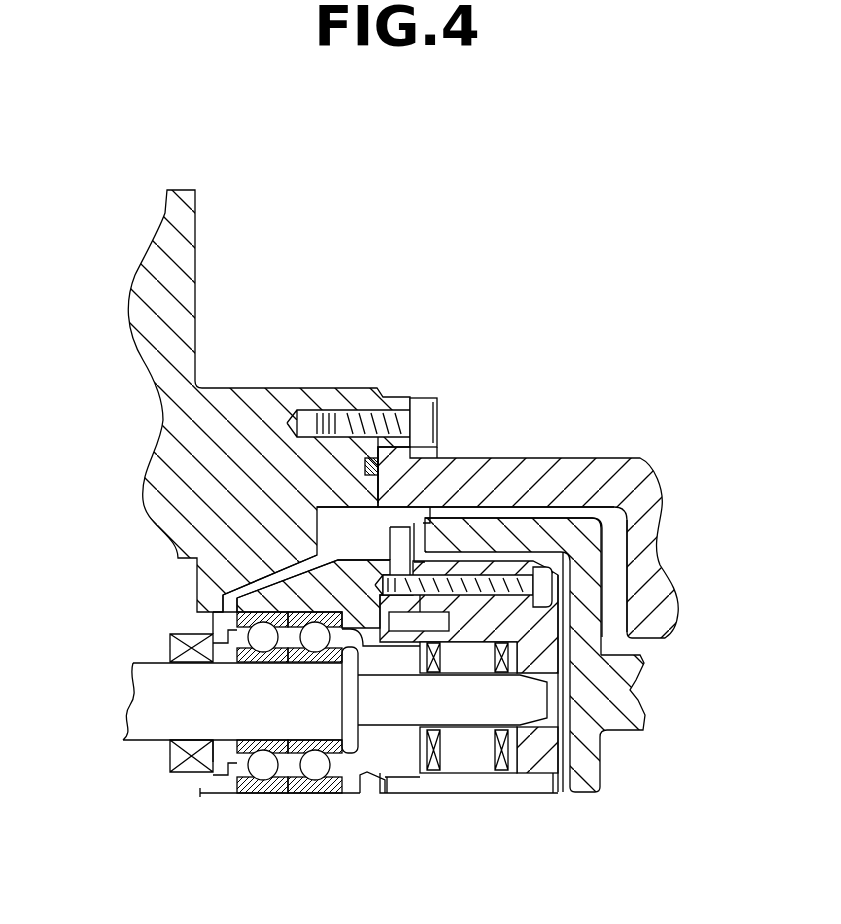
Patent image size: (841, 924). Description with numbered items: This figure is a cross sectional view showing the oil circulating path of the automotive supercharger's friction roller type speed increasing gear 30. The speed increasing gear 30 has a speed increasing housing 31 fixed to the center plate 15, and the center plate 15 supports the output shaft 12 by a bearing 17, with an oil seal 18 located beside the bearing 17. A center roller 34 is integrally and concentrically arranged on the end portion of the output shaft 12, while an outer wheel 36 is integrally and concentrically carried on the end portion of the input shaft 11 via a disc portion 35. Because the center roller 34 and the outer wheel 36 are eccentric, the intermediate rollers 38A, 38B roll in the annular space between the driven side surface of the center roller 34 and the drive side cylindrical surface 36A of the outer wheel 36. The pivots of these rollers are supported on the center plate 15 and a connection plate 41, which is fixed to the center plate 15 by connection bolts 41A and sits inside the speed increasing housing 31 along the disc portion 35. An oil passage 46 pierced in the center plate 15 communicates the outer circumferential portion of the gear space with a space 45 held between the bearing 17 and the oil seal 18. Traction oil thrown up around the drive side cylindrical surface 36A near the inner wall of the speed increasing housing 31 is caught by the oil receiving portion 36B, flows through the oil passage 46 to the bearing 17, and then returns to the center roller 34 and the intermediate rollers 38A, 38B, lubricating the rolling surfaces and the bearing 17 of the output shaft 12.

The input shaft 11 is at (607, 703).
The output shaft 12 is at (160, 706).
The center plate 15 is at (182, 263).
The bearing 17 is at (315, 763).
The oil seal 18 is at (190, 636).
The speed increasing gear 30 is at (652, 446).
The speed increasing housing 31 is at (617, 483).
The center roller 34 is at (465, 700).
The disc portion 35 is at (590, 777).
The outer wheel 36 is at (533, 537).
The drive side cylindrical surface 36A is at (452, 545).
The oil receiving portion 36B is at (350, 535).
The intermediate roller 38A is at (448, 775).
The intermediate roller 38B is at (468, 660).
The connection plate 41 is at (537, 627).
The connection bolt 41A is at (507, 570).
The space 45 is at (227, 676).
The oil passage 46 is at (293, 573).